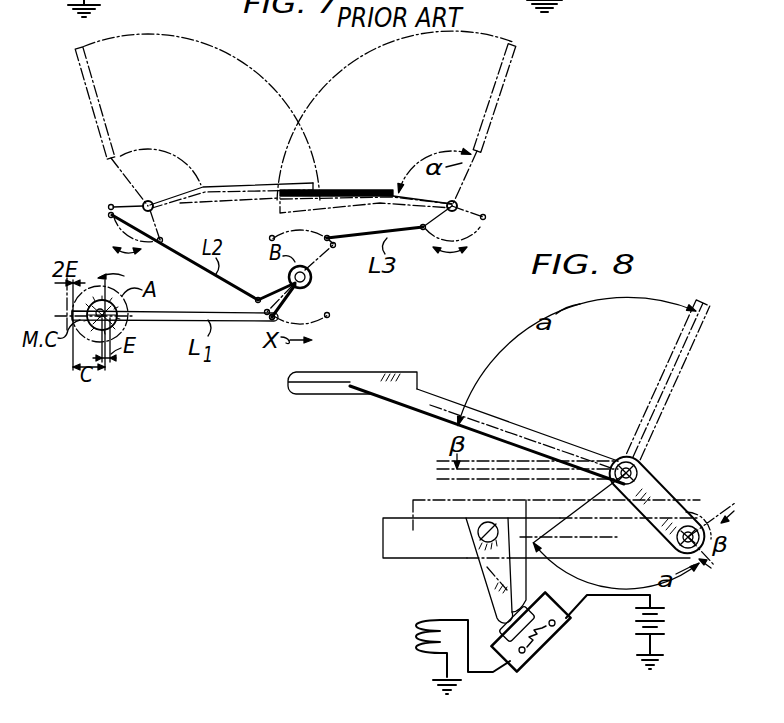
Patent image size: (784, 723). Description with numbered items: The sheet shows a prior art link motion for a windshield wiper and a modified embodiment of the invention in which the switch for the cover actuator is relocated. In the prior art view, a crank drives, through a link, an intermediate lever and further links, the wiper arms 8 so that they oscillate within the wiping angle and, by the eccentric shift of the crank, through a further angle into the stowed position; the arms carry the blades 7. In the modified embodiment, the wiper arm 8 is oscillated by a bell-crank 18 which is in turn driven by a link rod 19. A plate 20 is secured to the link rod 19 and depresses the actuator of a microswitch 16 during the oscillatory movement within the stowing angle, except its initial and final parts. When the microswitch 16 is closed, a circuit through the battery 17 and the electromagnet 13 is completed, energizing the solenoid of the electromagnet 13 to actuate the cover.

In FIG. 7, the blade 7 is at (333, 184).
In FIG. 8, the blade 7 is at (407, 384).
In FIG. 7, the wiper arm 8 is at (184, 194).
In FIG. 8, the wiper arm 8 is at (442, 409).
In FIG. 8, the electromagnet 13 is at (411, 638).
In FIG. 8, the microswitch 16 is at (558, 632).
In FIG. 8, the battery 17 is at (668, 627).
In FIG. 8, the bell-crank 18 is at (657, 478).
In FIG. 8, the link rod 19 is at (384, 547).
In FIG. 8, the plate 20 is at (487, 572).